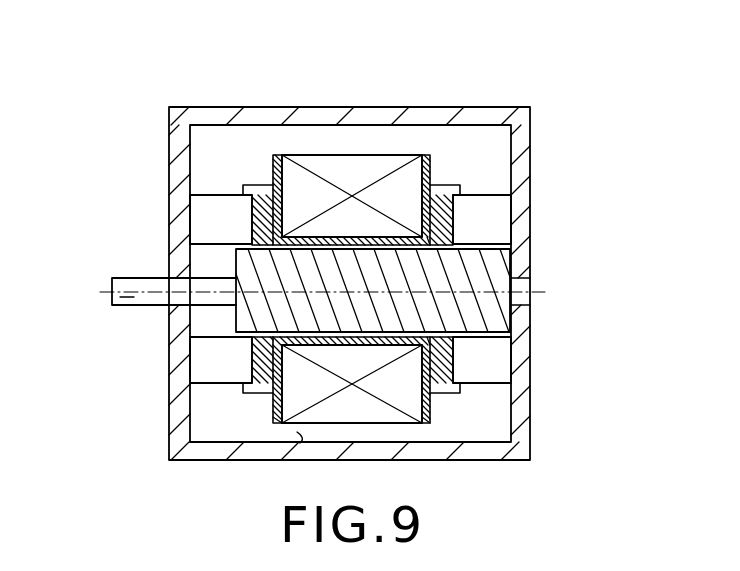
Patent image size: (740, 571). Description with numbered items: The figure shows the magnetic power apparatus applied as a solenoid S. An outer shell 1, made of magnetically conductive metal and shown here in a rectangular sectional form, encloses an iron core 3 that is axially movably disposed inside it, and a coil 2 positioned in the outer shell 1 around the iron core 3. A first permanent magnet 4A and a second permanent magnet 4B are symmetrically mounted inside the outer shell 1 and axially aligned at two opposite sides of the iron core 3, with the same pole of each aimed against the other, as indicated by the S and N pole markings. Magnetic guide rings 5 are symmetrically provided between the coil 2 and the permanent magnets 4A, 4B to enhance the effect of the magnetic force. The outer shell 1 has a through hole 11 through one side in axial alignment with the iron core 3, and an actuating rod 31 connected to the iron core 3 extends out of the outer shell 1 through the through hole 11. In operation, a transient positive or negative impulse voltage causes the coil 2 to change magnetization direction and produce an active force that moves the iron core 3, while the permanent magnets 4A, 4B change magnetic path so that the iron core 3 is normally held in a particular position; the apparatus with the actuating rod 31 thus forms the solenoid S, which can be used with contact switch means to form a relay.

The solenoid S is at (66, 186).
The outer shell 1 is at (168, 147).
The coil 2 is at (347, 172).
The iron core 3 is at (357, 277).
The first permanent magnet 4A is at (211, 205).
The second permanent magnet 4B is at (491, 203).
The magnetic guide rings 5 is at (260, 188).
The through hole 11 is at (175, 286).
The actuating rod 31 is at (127, 297).